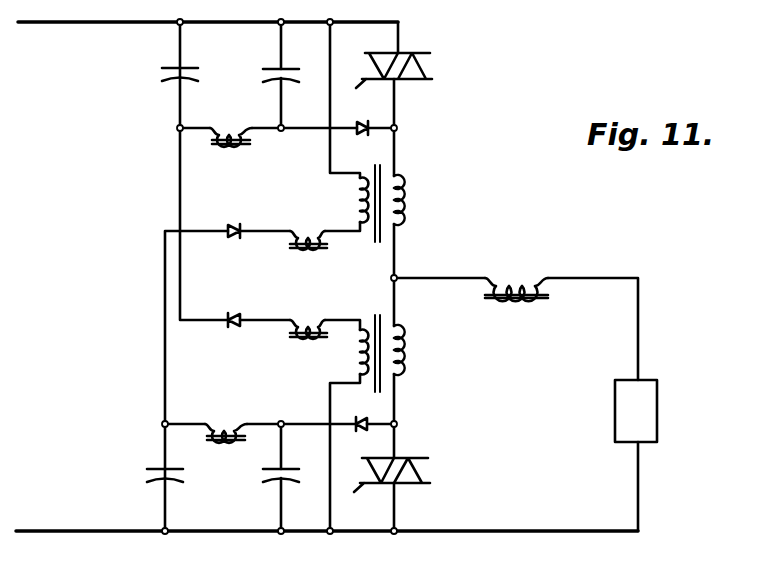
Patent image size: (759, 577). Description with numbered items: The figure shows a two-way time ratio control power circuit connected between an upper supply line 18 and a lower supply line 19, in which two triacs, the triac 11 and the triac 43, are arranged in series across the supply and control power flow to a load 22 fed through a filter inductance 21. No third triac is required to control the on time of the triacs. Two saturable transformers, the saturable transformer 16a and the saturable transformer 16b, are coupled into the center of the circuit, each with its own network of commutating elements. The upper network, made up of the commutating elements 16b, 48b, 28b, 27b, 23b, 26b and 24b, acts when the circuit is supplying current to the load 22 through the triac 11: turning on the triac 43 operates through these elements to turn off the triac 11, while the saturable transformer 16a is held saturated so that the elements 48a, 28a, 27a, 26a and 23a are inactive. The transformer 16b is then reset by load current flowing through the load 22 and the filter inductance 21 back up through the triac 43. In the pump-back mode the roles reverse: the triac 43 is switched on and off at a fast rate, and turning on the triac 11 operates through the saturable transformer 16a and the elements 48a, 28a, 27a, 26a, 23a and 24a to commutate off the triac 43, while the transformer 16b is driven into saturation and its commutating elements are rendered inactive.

The supply line 18 is at (58, 24).
The supply line 19 is at (82, 528).
The commutating element 27b is at (172, 66).
The commutating element 23b is at (273, 66).
The triac 11 is at (424, 68).
The commutating element 26b is at (226, 127).
The commutating element 24b is at (360, 124).
The commutating element 28a is at (234, 226).
The commutating element 48a is at (302, 226).
The saturable transformer 16a is at (408, 186).
The commutating element 28b is at (236, 315).
The commutating element 48b is at (306, 316).
The saturable transformer 16b is at (406, 346).
The filter inductance 21 is at (538, 276).
The load 22 is at (657, 404).
The commutating element 26a is at (224, 423).
The commutating element 24a is at (360, 419).
The triac 43 is at (420, 472).
The commutating element 27a is at (151, 467).
The commutating element 23a is at (276, 482).